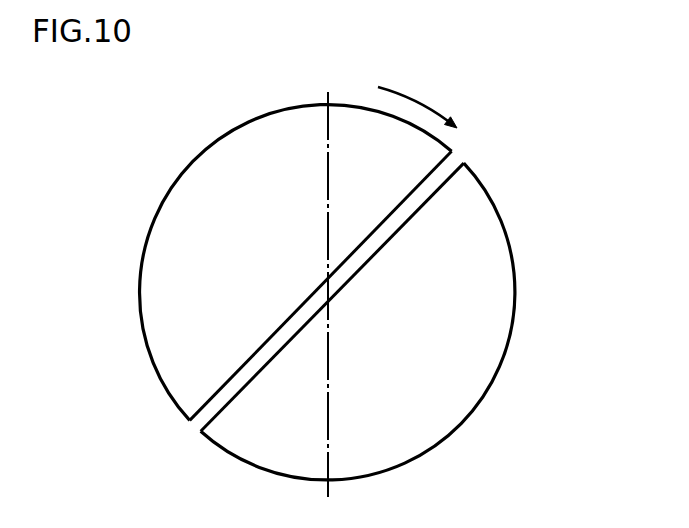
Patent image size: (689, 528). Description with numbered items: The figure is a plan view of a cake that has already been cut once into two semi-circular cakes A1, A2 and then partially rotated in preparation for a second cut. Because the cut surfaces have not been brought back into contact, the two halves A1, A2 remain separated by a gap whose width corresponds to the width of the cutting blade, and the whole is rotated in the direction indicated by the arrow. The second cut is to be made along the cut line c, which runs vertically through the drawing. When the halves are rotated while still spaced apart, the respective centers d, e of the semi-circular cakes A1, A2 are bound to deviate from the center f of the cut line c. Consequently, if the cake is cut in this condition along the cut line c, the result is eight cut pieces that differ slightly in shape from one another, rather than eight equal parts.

The semi-circular cake A1 is at (158, 247).
The semi-circular cake A2 is at (500, 323).
The cut line c is at (329, 381).
The center of semi-circular cake A1 d is at (322, 288).
The center of semi-circular cake A2 e is at (330, 298).
The center of the cut line f is at (335, 290).